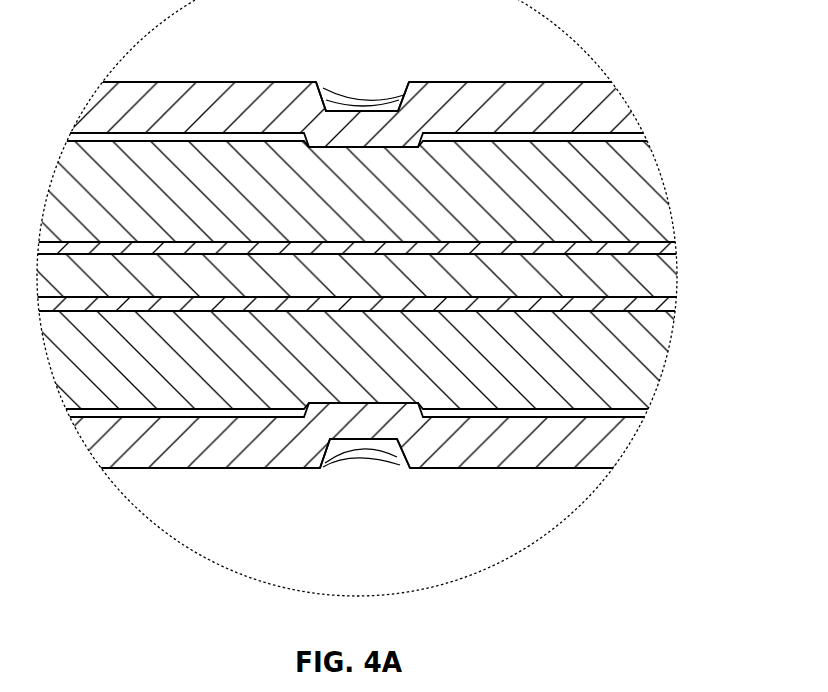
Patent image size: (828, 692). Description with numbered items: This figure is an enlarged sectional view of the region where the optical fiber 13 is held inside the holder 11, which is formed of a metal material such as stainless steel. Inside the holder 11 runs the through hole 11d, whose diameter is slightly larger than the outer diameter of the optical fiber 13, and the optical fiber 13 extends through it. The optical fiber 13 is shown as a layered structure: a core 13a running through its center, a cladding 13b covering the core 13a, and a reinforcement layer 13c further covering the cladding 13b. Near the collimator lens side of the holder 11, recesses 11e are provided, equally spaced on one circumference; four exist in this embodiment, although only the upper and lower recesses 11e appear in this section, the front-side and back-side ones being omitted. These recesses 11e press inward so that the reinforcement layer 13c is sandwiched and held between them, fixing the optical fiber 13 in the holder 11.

The holder 11 is at (440, 82).
The through hole 11d is at (177, 132).
The recess 11e is at (399, 98).
The optical fiber 13 is at (388, 275).
The core 13a is at (367, 275).
The cladding 13b is at (663, 249).
The reinforcement layer 13c is at (662, 218).